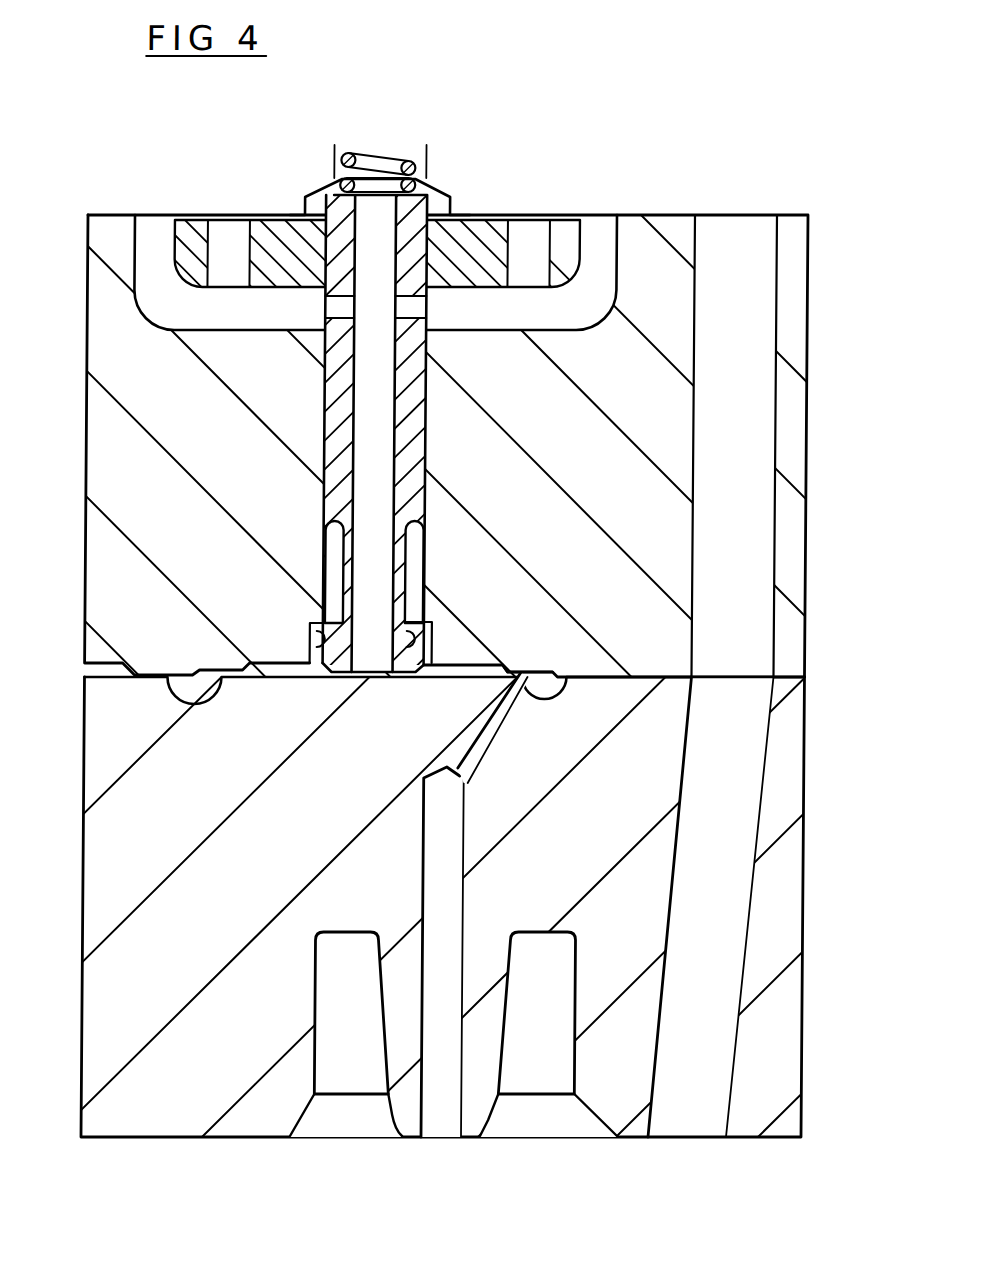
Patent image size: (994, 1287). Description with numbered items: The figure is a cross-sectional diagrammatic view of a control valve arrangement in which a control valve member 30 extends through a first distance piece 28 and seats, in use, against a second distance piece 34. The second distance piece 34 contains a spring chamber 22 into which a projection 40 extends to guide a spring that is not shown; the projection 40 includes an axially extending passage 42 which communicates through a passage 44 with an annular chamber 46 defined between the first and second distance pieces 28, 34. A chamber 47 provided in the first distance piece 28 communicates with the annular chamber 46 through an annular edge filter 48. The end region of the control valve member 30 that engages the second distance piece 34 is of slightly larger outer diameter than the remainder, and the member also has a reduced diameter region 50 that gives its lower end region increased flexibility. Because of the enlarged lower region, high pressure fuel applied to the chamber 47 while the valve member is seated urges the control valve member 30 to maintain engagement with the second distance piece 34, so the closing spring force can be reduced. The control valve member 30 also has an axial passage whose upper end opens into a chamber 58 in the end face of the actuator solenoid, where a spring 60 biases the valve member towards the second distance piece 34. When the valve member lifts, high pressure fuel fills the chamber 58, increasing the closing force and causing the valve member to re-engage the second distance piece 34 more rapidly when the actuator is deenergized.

The spring chamber 22 is at (550, 1125).
The first distance piece 28 is at (801, 413).
The control valve member 30 is at (340, 420).
The second distance piece 34 is at (801, 806).
The projection 40 is at (412, 1117).
The axially extending passage 42 is at (454, 1092).
The passage 44 is at (497, 747).
The annular chamber 46 is at (564, 681).
The chamber 47 is at (314, 626).
The annular edge filter 48 is at (533, 662).
The reduced diameter region 50 is at (328, 568).
The chamber 58 is at (472, 210).
The spring 60 is at (423, 192).